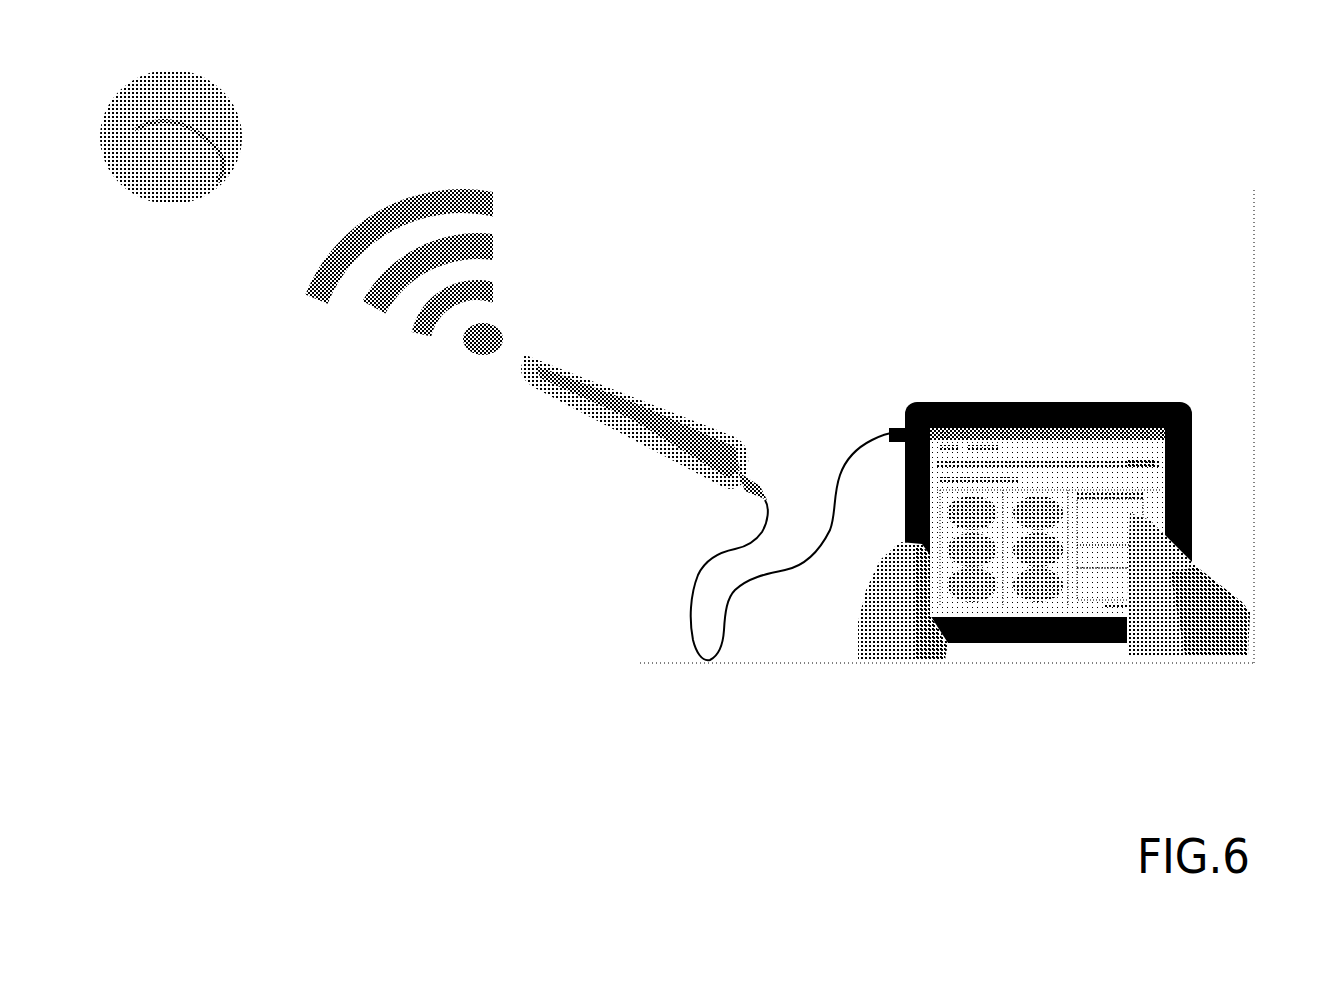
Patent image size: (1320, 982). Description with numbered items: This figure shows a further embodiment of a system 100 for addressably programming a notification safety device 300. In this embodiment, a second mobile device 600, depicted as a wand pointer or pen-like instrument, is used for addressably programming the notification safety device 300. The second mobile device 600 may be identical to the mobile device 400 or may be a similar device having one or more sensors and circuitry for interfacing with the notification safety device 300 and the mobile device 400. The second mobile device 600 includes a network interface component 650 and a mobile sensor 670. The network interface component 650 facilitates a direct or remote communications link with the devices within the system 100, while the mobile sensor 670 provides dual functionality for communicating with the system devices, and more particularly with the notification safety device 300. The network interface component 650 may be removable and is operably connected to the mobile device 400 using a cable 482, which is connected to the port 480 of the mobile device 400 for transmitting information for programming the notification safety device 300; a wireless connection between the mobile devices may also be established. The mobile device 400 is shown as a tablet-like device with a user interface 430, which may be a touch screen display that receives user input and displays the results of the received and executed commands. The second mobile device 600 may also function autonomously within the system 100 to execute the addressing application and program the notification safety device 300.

The system 100 is at (1123, 93).
The notification safety device 300 is at (261, 105).
The mobile device 400 is at (1150, 403).
The user interface 430 is at (1030, 436).
The port 480 is at (888, 392).
The cable 482 is at (697, 636).
The second mobile device 600 is at (584, 436).
The network interface component 650 is at (723, 505).
The mobile sensor 670 is at (504, 372).